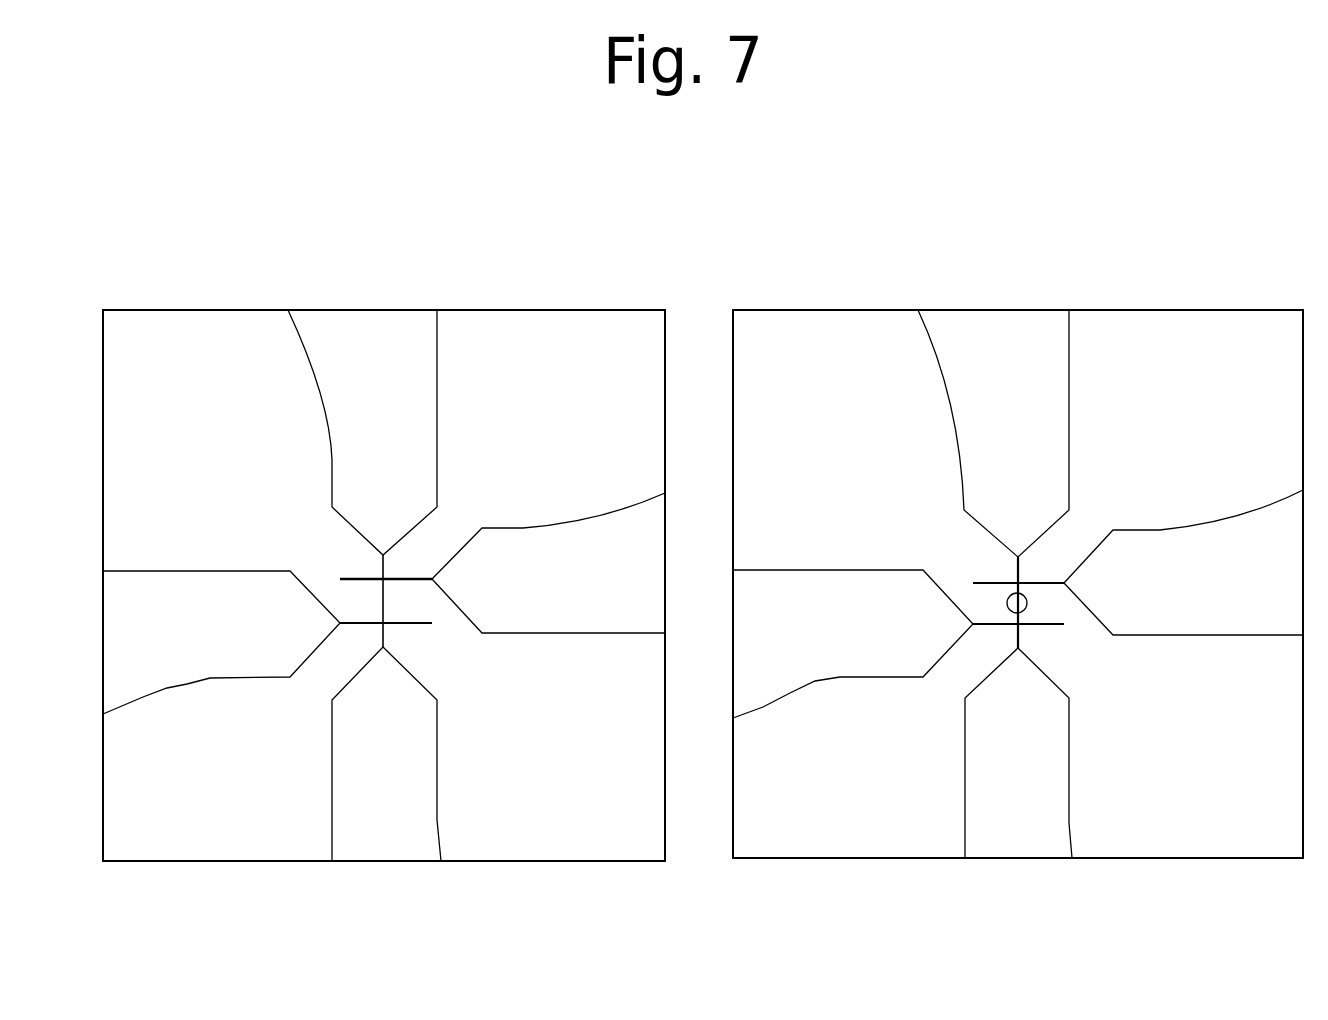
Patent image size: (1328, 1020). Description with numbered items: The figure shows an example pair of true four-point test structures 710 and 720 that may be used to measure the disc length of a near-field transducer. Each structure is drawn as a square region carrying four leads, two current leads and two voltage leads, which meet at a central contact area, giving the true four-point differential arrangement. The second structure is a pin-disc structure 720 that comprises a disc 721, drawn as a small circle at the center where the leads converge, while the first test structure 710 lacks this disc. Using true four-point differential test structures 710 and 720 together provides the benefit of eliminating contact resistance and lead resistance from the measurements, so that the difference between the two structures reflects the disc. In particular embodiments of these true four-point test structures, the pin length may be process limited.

The true four-point test structure 710 is at (380, 318).
The pin-disc structure 720 is at (1015, 318).
The disc 721 is at (1018, 603).